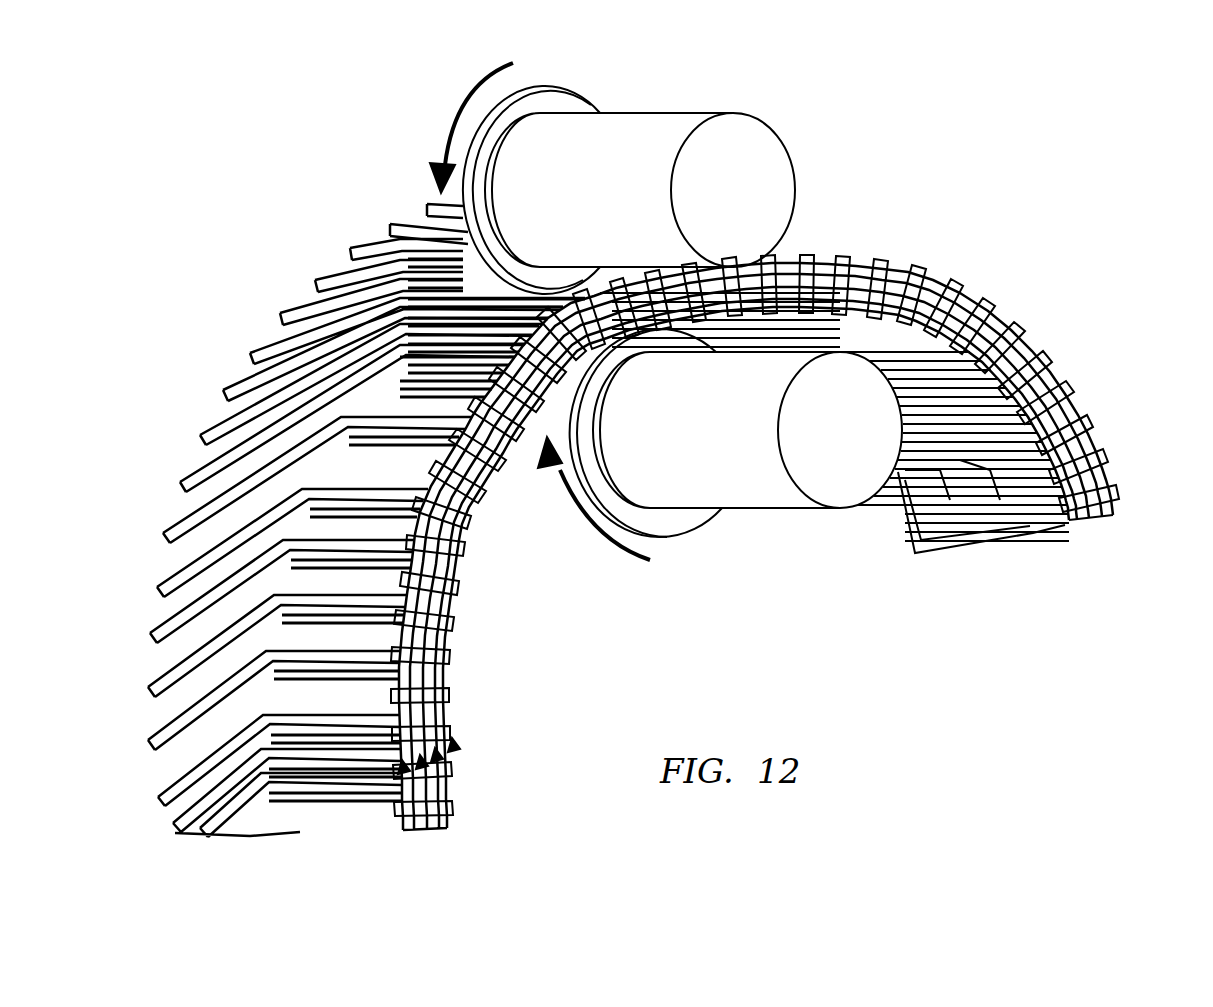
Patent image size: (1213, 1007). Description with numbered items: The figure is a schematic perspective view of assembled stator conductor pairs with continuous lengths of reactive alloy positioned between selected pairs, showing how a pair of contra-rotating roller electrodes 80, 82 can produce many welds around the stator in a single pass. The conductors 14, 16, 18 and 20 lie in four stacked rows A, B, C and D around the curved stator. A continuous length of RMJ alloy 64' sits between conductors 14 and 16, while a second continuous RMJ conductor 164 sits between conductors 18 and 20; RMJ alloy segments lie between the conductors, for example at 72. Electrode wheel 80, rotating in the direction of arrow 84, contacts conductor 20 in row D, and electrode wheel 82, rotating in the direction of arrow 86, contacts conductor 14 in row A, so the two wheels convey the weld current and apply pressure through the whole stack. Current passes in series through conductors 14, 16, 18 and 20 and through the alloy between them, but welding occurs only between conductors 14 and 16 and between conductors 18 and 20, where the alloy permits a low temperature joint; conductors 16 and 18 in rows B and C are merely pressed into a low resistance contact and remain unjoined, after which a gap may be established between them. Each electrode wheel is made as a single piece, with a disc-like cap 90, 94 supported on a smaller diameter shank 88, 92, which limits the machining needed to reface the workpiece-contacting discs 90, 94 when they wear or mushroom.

The conductor 14 is at (1055, 515).
The conductor 16 is at (1100, 508).
The conductor 18 is at (1093, 462).
The conductor 20 is at (1108, 470).
The continuous length of RMJ alloy 64' is at (721, 535).
The RMJ alloy segment location 72 is at (597, 330).
The roller electrode 80 is at (786, 143).
The roller electrode 82 is at (763, 509).
The arrow 84 is at (447, 120).
The arrow 86 is at (570, 517).
The shank 88 is at (697, 504).
The disc-like cap 90 is at (620, 524).
The shank 92 is at (632, 110).
The disc-like cap 94 is at (596, 97).
The continuous RMJ conductor 164 is at (443, 597).
The row A is at (457, 748).
The row B is at (439, 758).
The row C is at (418, 765).
The row D is at (400, 771).